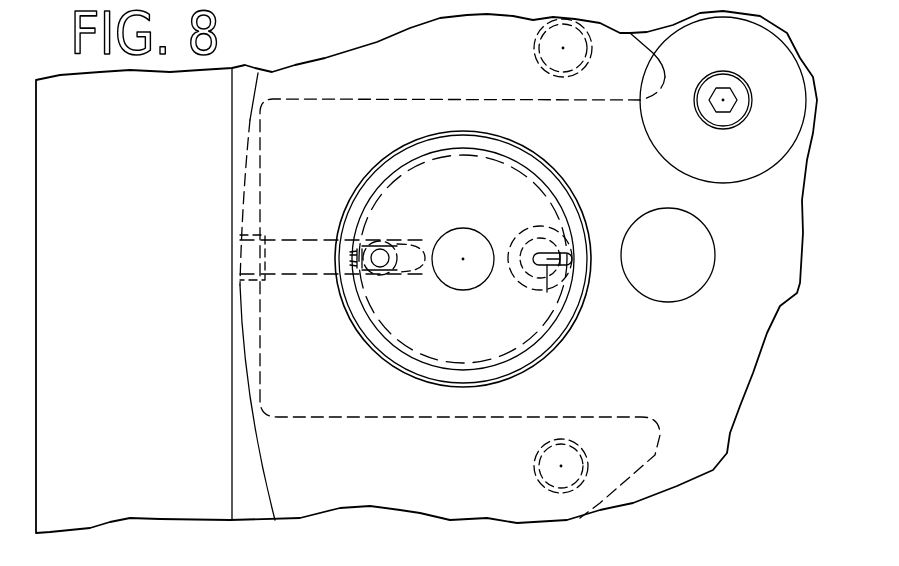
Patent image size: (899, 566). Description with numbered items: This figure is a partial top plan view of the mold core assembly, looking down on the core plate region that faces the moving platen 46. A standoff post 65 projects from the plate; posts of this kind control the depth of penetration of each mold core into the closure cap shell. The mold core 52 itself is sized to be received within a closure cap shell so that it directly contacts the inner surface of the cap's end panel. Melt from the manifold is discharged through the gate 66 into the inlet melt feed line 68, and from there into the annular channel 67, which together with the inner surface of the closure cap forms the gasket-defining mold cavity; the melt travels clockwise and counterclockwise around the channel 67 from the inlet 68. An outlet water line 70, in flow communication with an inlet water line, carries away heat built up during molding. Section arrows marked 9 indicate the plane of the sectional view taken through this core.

The moving platen 46 is at (36, 107).
The section line 9- 9 is at (100, 258).
The standoff post 65 is at (787, 113).
The annular channel 67 is at (530, 165).
The mold core 52 is at (548, 333).
The gate 66 is at (527, 248).
The inlet melt feed line 68 is at (547, 292).
The outlet water line 70 is at (245, 260).